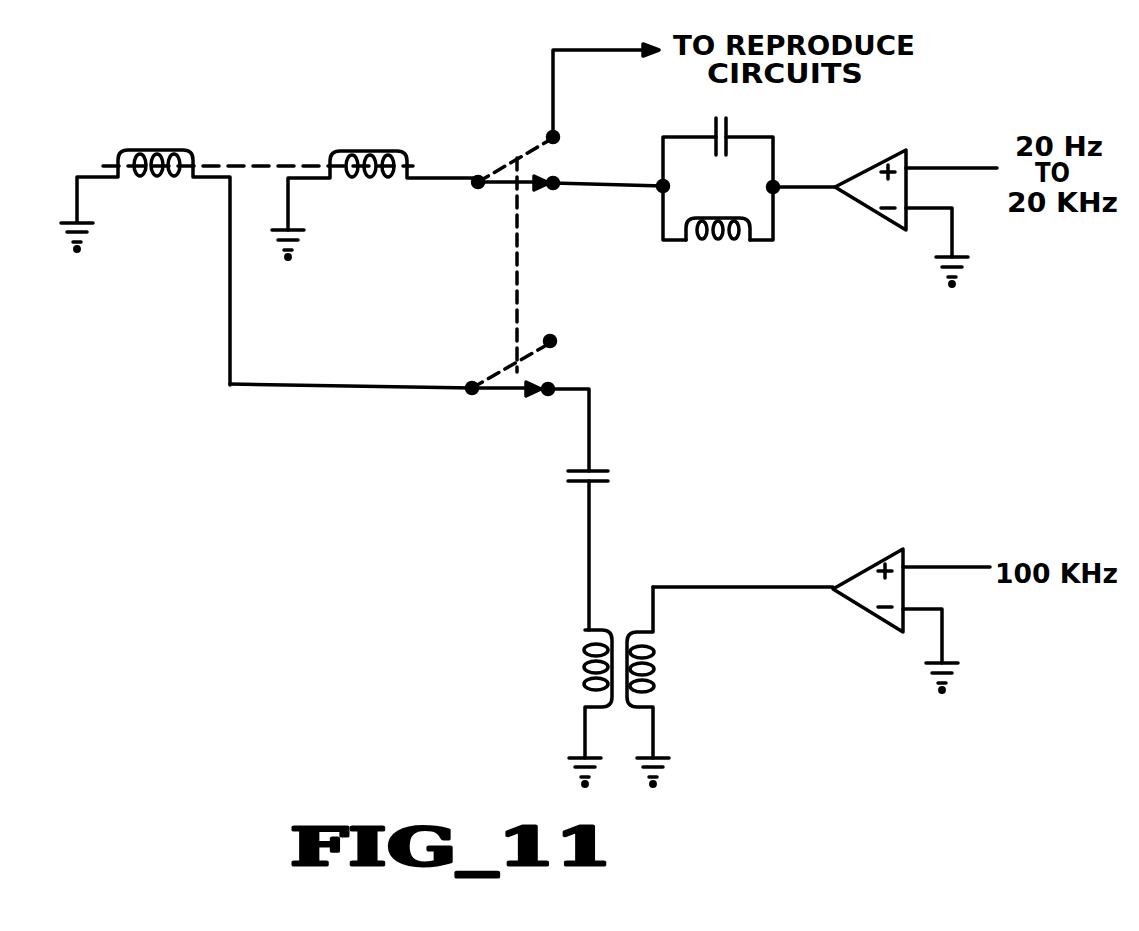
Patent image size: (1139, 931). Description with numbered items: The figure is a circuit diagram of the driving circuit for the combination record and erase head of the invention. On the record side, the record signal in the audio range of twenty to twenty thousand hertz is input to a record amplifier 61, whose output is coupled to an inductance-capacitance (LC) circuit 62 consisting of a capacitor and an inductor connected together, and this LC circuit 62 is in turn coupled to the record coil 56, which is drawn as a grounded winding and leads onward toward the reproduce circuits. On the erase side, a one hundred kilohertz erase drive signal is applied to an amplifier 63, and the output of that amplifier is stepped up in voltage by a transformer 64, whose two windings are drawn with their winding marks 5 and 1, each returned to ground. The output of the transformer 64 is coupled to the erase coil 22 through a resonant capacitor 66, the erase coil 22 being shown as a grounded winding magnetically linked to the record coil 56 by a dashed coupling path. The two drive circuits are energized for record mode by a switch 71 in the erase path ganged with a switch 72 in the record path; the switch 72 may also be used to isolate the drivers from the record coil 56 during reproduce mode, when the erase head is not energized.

The erase coil 22 is at (166, 152).
The record coil 56 is at (371, 184).
The switch 72 is at (556, 166).
The switch 71 is at (552, 368).
The record amplifier 61 is at (869, 178).
The inductance-capacitance (LC) circuit 62 is at (731, 249).
The resonant capacitor 66 is at (604, 468).
The amplifier 63 is at (869, 579).
The transformer 64 is at (563, 686).
The transformer secondary winding terminal 5 is at (582, 708).
The transformer primary winding terminal 1 is at (655, 686).